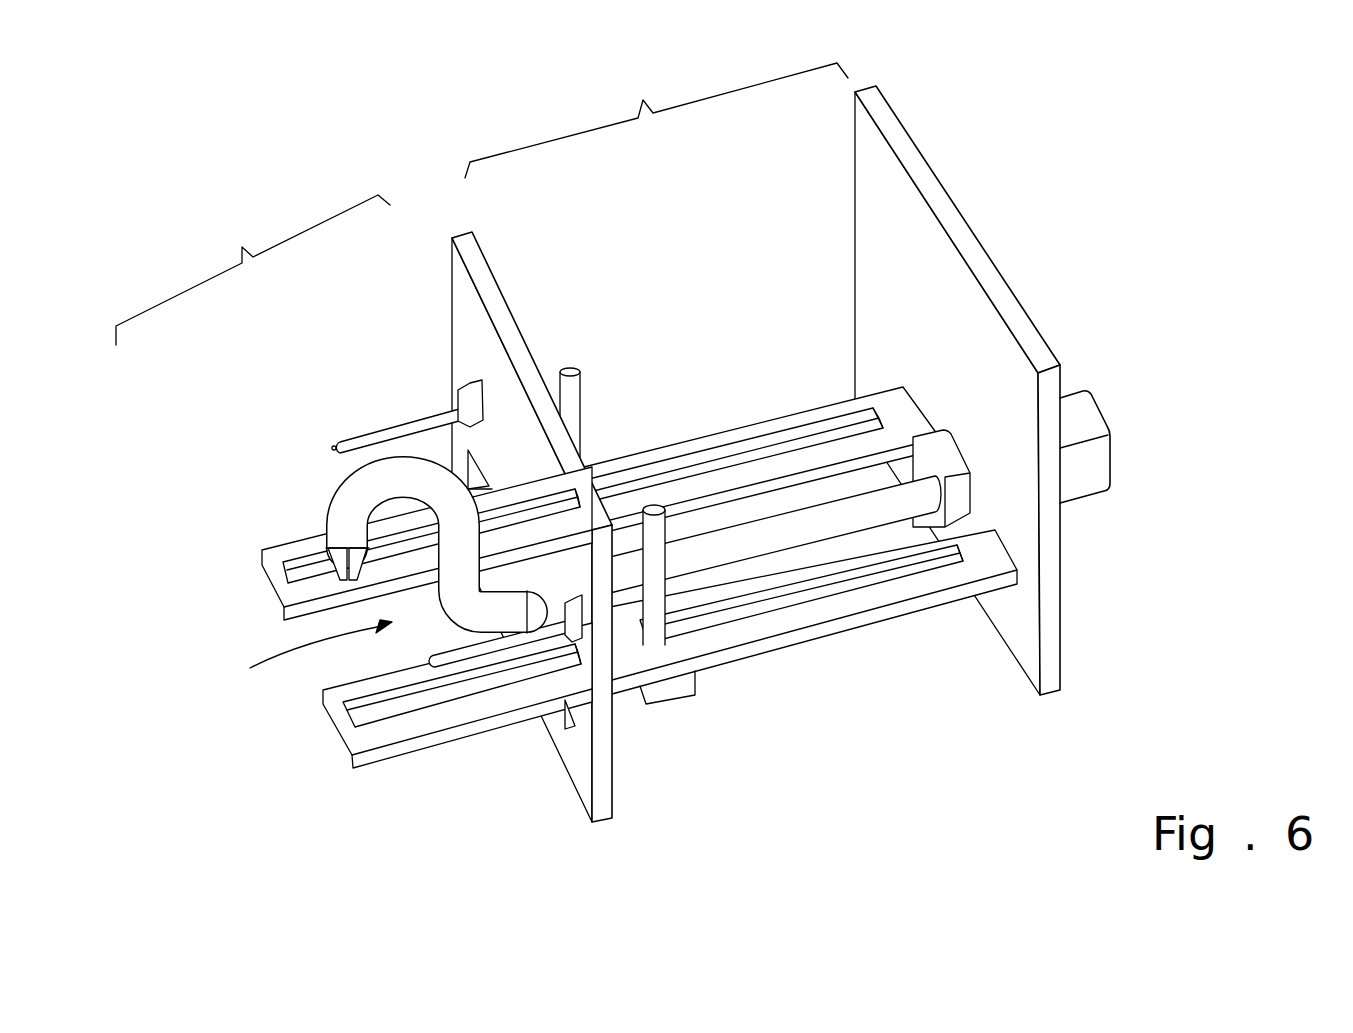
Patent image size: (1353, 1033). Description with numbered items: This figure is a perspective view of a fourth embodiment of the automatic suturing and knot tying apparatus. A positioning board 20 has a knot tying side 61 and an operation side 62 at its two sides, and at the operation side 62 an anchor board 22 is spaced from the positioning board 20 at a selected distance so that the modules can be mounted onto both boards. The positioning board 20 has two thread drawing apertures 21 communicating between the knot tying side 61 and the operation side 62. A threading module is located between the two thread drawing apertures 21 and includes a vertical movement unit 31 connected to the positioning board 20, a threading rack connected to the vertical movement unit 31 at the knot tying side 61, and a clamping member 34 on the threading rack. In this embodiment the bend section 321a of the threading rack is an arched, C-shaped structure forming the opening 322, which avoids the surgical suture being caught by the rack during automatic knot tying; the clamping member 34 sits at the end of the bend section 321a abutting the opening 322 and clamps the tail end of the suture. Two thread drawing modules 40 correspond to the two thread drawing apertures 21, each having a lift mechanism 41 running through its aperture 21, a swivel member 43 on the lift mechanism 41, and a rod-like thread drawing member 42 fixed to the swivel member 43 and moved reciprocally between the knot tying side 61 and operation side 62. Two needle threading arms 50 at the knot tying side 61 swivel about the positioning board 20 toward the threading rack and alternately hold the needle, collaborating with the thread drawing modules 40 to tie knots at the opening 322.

The positioning board 20 is at (474, 250).
The thread drawing aperture 21 is at (478, 460).
The anchor board 22 is at (885, 115).
The vertical movement unit 31 is at (958, 494).
The clamping member 34 is at (318, 560).
The thread drawing module 40 is at (788, 538).
The lift mechanism 41 is at (735, 438).
The thread drawing member 42 is at (578, 418).
The swivel member 43 is at (714, 709).
The needle threading arm 50 is at (403, 420).
The knot tying side 61 is at (253, 270).
The operation side 62 is at (656, 120).
The bend section 321a is at (368, 500).
The opening 322 is at (293, 651).